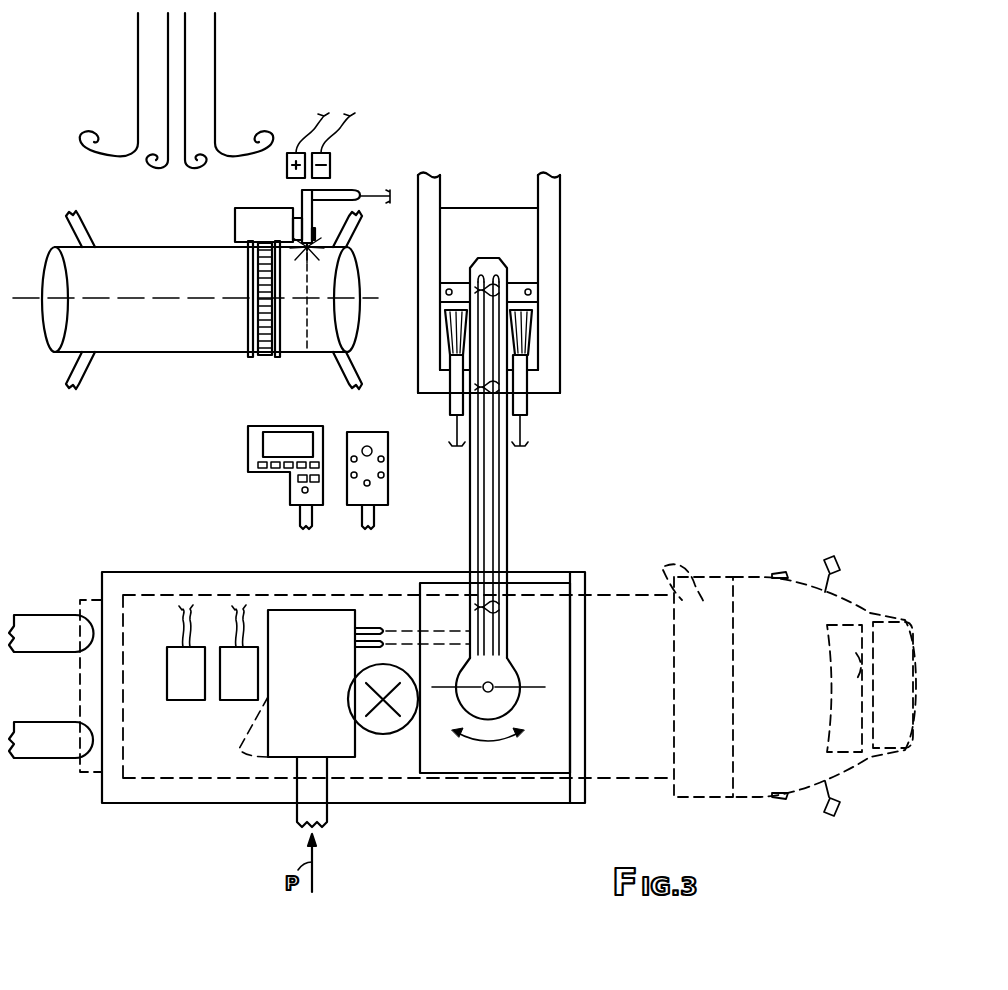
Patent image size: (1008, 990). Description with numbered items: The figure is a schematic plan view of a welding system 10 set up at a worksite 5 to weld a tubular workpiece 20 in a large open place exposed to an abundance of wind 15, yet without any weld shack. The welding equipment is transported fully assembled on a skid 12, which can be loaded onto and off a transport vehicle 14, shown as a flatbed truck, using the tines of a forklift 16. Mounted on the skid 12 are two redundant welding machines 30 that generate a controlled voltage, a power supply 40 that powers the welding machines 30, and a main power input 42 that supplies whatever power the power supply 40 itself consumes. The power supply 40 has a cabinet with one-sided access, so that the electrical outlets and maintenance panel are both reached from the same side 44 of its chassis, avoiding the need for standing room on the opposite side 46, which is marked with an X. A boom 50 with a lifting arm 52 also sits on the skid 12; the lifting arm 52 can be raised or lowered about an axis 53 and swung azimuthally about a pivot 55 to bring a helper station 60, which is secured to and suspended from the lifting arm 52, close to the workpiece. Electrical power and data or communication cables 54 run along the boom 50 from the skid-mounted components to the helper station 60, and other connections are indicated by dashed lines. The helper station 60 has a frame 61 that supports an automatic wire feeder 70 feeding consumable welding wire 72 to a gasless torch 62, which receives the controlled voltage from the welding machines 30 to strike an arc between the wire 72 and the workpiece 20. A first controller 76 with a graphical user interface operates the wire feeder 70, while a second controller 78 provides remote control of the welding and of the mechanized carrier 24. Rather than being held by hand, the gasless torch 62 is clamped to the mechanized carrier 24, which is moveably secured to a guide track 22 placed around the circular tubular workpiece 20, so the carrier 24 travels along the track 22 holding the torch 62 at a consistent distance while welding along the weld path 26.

The worksite 5 is at (27, 490).
The welding system 10 is at (640, 211).
The skid 12 is at (170, 796).
The transport vehicle 14 is at (750, 592).
The wind 15 is at (232, 66).
The forklift 16 is at (48, 628).
The tubular workpiece 20 is at (152, 340).
The guide track 22 is at (245, 330).
The mechanized carrier 24 is at (276, 238).
The weld path 26 is at (312, 330).
The welding machine 30 is at (176, 694).
The power supply 40 is at (300, 708).
The main power input 42 is at (328, 812).
The same side 44 is at (216, 742).
The opposite side 46 is at (385, 735).
The boom 50 is at (575, 453).
The lifting arm 52 is at (510, 500).
The axis 53 is at (535, 690).
The electrical power and data or communication cables 54 is at (492, 542).
The pivot 55 is at (487, 692).
The helper station 60 is at (577, 312).
The frame 61 is at (560, 262).
The gasless torch 62 is at (302, 200).
The automatic wire feeder 70 is at (527, 330).
The consumable welding wire 72 is at (372, 193).
The first controller 76 is at (262, 476).
The second controller 78 is at (349, 497).